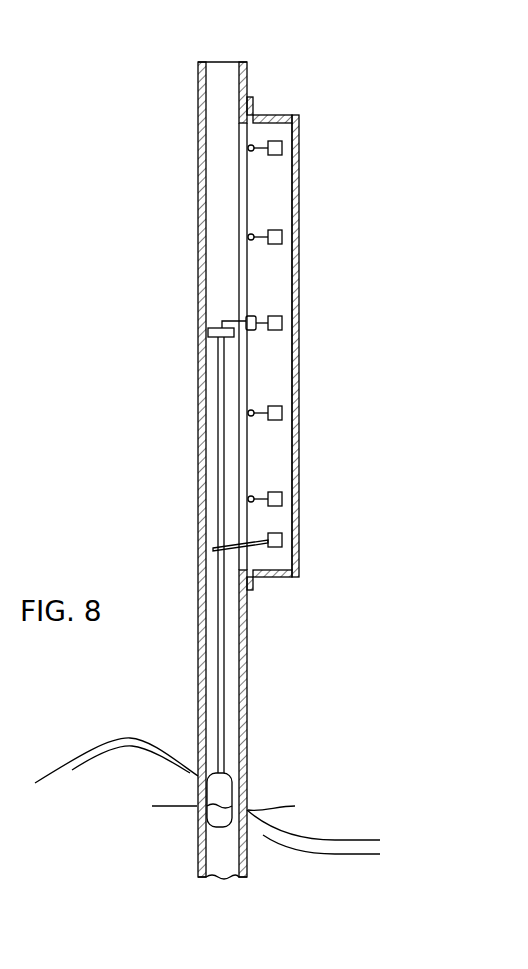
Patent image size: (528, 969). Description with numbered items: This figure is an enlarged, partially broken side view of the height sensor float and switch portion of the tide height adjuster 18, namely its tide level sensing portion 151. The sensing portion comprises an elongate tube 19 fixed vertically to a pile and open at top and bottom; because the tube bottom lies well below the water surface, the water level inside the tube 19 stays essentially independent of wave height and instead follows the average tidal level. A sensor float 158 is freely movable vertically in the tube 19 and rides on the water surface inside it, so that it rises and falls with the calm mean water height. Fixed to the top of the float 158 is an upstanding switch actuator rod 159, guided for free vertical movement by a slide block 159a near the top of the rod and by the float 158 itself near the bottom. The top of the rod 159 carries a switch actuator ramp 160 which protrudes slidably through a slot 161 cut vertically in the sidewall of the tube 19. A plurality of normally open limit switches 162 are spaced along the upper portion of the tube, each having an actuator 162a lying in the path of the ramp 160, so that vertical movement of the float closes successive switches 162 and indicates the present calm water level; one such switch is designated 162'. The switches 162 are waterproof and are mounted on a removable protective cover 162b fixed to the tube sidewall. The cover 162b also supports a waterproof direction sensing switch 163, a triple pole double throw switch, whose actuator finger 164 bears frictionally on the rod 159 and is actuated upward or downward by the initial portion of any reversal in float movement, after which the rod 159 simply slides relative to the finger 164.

The tide height adjuster 18 is at (443, 107).
The elongate tube 19 is at (248, 92).
The tide level sensing portion 151 is at (346, 130).
The sensor float 158 is at (218, 792).
The switch actuator rod 159 is at (222, 668).
The slide block 159a is at (208, 334).
The switch actuator ramp 160 is at (256, 318).
The slot 161 is at (283, 172).
The limit switches 162 is at (361, 280).
The switch actuator 162a is at (255, 234).
The switch 162' is at (319, 327).
The protective cover 162b is at (292, 500).
The direction sensing switch 163 is at (285, 530).
The actuator finger 164 is at (270, 548).